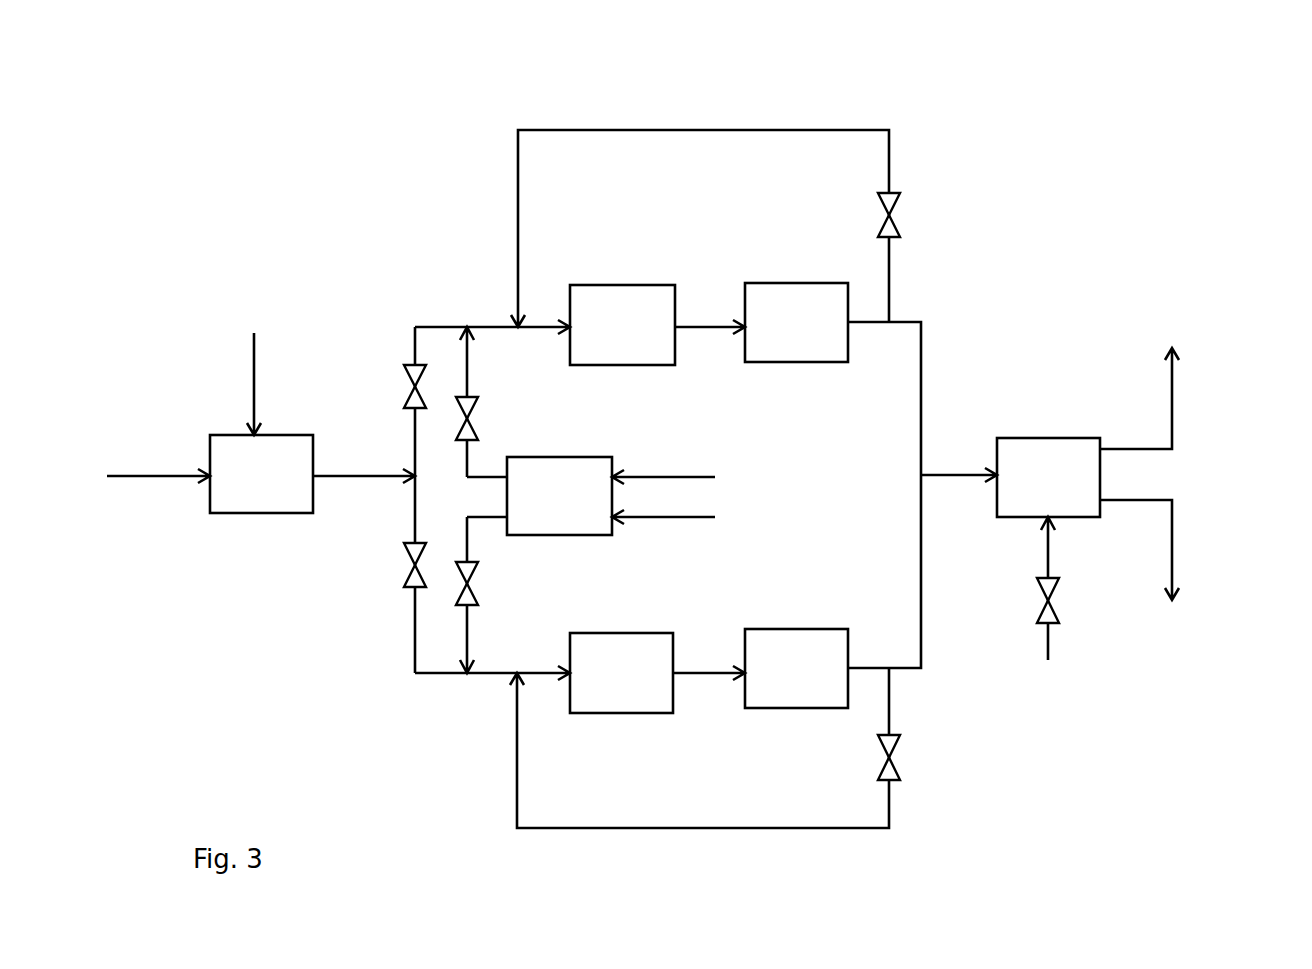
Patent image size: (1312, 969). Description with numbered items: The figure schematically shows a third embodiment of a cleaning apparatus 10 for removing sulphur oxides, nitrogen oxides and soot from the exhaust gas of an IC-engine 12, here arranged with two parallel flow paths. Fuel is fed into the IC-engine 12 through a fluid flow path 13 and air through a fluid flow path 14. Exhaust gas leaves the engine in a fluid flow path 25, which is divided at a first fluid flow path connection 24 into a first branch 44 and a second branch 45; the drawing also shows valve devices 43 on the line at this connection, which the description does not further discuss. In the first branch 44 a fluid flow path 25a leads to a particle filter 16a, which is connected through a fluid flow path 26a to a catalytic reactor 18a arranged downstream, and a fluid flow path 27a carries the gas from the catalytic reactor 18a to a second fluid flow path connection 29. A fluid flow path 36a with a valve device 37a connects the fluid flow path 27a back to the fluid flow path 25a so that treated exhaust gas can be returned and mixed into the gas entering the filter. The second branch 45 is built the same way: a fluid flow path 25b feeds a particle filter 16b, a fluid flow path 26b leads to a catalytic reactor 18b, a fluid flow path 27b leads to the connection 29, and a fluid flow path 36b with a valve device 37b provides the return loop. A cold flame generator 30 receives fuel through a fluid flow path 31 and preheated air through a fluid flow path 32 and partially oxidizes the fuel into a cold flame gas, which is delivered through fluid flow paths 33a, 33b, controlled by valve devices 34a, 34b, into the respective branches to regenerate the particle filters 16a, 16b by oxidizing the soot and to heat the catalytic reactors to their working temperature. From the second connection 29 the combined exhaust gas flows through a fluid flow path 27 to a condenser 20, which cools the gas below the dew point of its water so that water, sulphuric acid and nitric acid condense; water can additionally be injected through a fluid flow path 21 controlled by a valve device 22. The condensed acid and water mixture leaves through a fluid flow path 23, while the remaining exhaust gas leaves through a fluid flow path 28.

The cleaning apparatus 10 is at (972, 145).
The IC-engine 12 is at (255, 513).
The fluid flow path 13 is at (140, 476).
The fluid flow path 14 is at (258, 364).
The particle filter 16a is at (615, 285).
The particle filter 16b is at (610, 713).
The catalytic reactor 18a is at (773, 283).
The catalytic reactor 18b is at (798, 708).
The condenser 20 is at (1027, 438).
The fluid flow path 21 is at (1048, 547).
The valve device 22 is at (1050, 603).
The fluid flow path 23 is at (1172, 540).
The first fluid flow path connection 24 is at (417, 477).
The fluid flow path 25 is at (335, 476).
The fluid flow path 25a is at (420, 327).
The fluid flow path 25b is at (428, 677).
The line a 26a is at (703, 327).
The line b 26b is at (713, 677).
The fluid flow path 27 is at (970, 480).
The fluid flow path 27a is at (921, 355).
The fluid flow path 27b is at (922, 605).
The fluid flow path 28 is at (1172, 412).
The second fluid flow path connection 29 is at (921, 470).
The cold flame generator 30 is at (587, 537).
The fluid flow path 31 is at (673, 518).
The fluid flow path 32 is at (683, 477).
The line a 33a is at (467, 350).
The line b 33b is at (469, 645).
The valve a 34a is at (475, 424).
The valve b 34b is at (473, 583).
The fluid flow path 36a is at (848, 130).
The fluid flow path 36b is at (755, 828).
The valve device 37a is at (896, 215).
The valve device 37b is at (892, 757).
The valve 43 is at (415, 386).
The first branch 44 is at (455, 300).
The second branch 45 is at (447, 700).